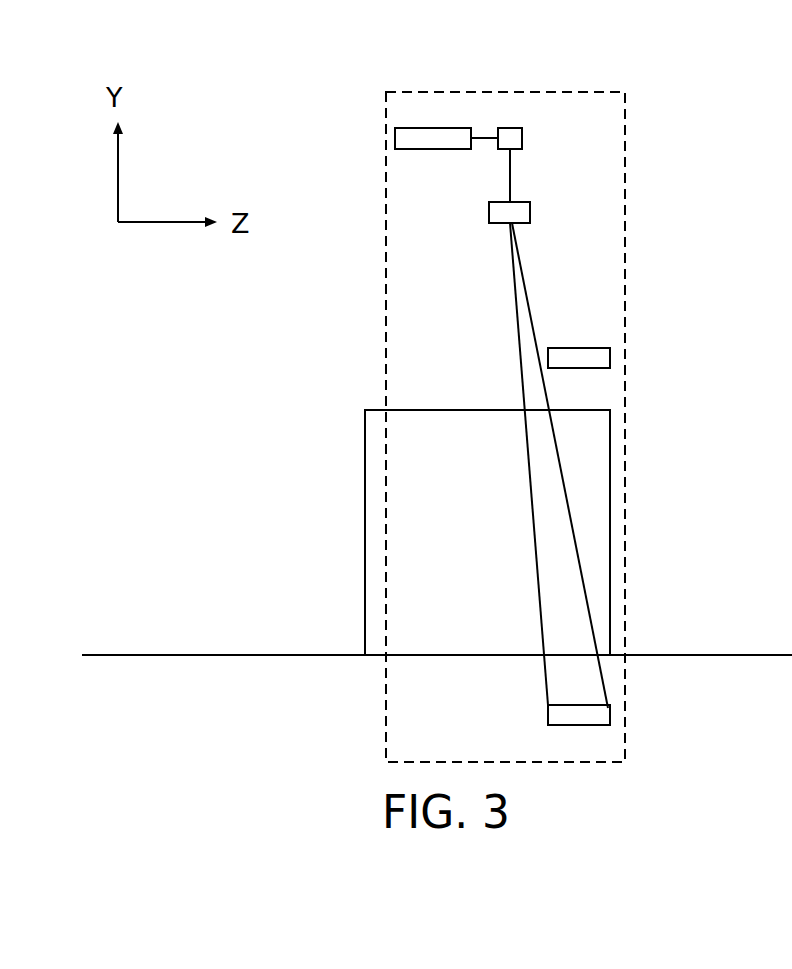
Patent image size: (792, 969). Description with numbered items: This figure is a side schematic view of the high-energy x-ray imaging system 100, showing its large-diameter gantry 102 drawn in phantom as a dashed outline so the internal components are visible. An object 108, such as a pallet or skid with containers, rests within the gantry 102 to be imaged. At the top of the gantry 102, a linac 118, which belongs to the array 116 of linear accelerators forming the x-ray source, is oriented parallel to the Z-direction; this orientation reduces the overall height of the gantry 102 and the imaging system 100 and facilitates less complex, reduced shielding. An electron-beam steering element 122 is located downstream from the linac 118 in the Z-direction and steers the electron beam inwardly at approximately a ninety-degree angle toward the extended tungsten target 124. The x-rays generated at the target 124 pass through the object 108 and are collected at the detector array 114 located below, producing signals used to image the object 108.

The high-energy x-ray imaging system 100 is at (538, 410).
The large-diameter gantry 102 is at (380, 220).
The object 108 is at (365, 458).
The detector array 114 is at (610, 715).
The array 116 is at (420, 292).
The linac 118 is at (428, 128).
The electron-beam steering element 122 is at (515, 128).
The target 124 is at (523, 202).